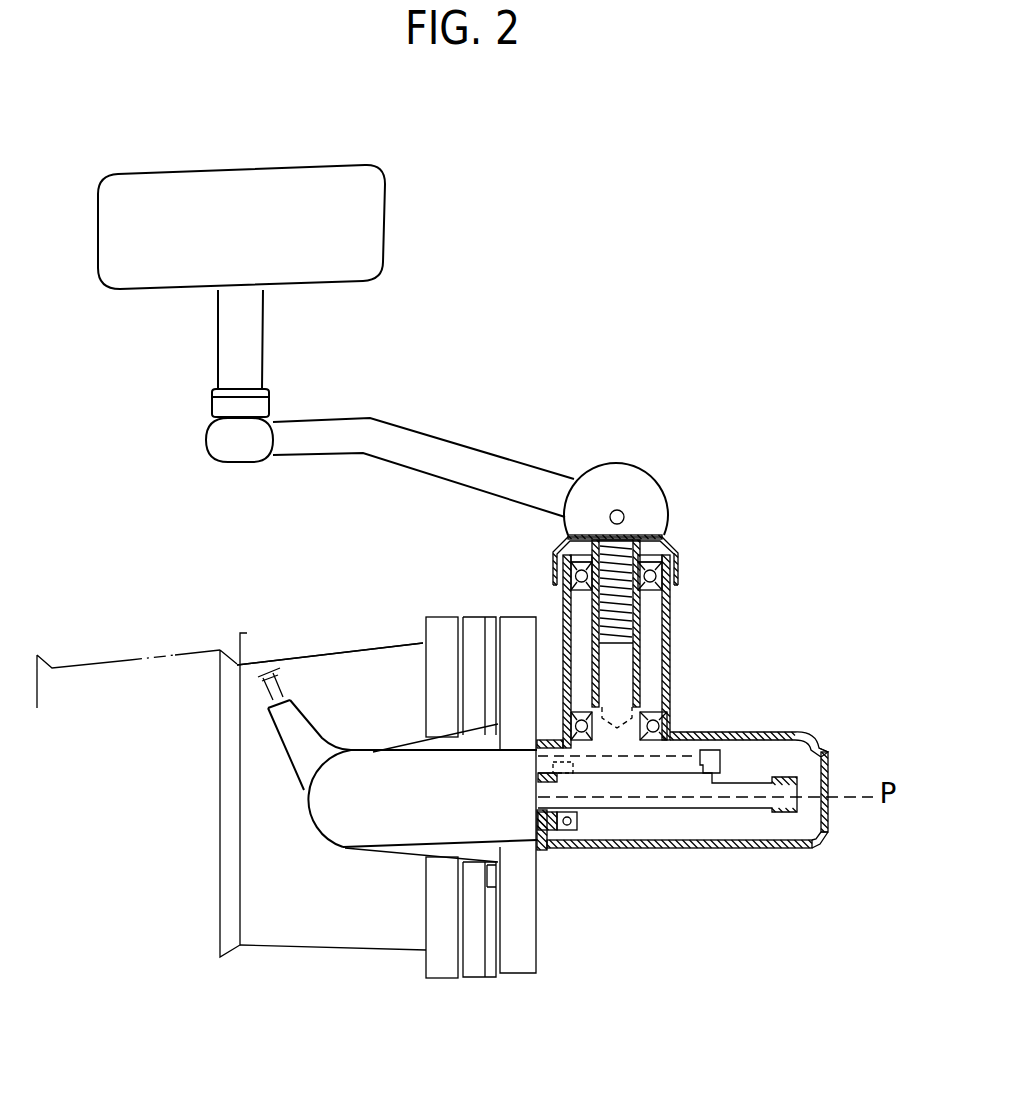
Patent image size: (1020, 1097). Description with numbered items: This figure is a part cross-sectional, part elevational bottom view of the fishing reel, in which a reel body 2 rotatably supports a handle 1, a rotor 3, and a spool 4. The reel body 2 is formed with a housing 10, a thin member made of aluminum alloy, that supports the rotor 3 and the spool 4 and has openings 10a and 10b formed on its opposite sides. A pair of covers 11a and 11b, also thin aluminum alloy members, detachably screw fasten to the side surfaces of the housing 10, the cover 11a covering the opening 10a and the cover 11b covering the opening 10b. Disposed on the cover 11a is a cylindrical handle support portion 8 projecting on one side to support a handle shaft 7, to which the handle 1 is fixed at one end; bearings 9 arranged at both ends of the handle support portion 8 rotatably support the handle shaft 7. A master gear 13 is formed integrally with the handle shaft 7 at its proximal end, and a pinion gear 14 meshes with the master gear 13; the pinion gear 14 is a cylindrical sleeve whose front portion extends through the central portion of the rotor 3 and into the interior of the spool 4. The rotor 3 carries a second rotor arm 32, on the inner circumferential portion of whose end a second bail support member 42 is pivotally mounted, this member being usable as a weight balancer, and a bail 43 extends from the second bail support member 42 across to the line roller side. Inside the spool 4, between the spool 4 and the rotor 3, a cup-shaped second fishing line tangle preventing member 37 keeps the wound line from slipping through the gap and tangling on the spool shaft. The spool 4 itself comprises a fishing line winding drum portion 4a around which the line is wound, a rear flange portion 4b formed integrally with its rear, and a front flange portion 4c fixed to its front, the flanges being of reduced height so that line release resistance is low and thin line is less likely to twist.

The handle 1 is at (517, 472).
The reel body 2 is at (808, 722).
The rotor 3 is at (515, 628).
The spool 4 is at (347, 663).
The fishing line winding drum portion 4a is at (298, 655).
The rear flange portion 4b is at (435, 620).
The front flange portion 4c is at (220, 650).
The handle shaft 7 is at (638, 673).
The handle support portion 8 is at (672, 637).
The bearings 9 is at (677, 562).
The housing 10 is at (832, 810).
The opening 10a is at (828, 753).
The opening 10b is at (815, 840).
The cover 11a is at (767, 733).
The cover 11b is at (693, 850).
The master gear 13 is at (712, 757).
The pinion gear 14 is at (548, 847).
The second rotor arm 32 is at (387, 825).
The second fishing line tangle preventing member 37 is at (467, 967).
The second bail support member 42 is at (292, 760).
The bail 43 is at (267, 693).